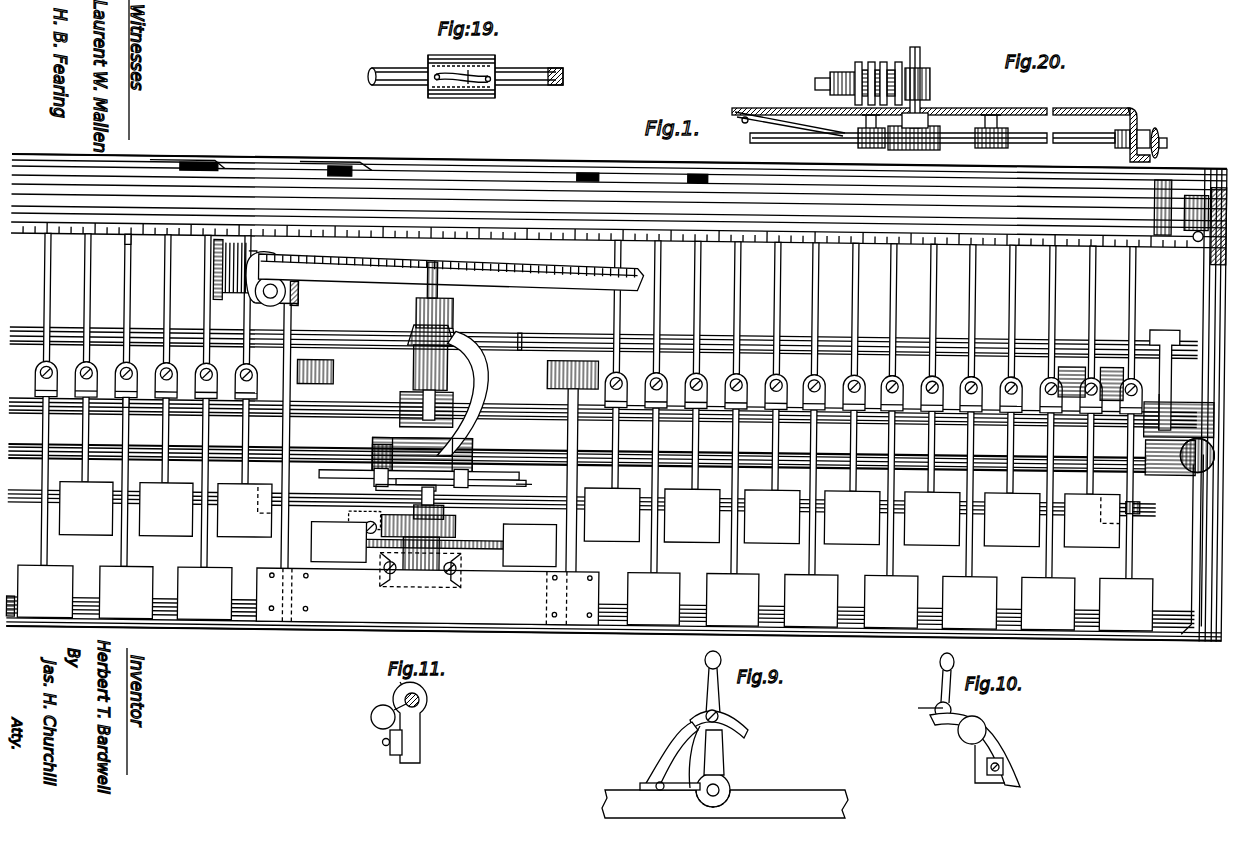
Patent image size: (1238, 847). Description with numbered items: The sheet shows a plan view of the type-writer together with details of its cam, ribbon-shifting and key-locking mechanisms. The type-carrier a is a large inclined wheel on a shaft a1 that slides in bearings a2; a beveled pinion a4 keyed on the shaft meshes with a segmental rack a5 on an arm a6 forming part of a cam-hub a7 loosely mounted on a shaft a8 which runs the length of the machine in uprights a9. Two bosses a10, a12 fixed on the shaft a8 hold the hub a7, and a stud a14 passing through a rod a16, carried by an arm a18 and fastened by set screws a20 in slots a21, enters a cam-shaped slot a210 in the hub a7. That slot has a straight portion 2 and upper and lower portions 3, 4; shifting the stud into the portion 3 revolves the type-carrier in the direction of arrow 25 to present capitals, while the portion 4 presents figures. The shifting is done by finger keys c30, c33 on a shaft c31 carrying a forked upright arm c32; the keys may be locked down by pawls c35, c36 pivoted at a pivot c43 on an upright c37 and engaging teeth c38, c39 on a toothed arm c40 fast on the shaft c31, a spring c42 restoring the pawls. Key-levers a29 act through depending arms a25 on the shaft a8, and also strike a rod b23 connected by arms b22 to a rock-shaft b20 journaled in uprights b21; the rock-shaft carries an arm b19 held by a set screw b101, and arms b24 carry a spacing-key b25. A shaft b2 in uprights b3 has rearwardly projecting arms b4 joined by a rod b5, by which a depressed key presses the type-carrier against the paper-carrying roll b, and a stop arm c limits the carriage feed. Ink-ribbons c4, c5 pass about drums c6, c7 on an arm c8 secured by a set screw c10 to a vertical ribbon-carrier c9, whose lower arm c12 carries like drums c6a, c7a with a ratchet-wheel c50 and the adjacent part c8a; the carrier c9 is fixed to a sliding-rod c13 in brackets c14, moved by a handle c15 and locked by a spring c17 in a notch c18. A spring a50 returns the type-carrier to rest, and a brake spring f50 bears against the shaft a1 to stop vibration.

In FIG. 1, the paper-carrying roll b is at (442, 175).
In FIG. 1, the stop arm c is at (217, 237).
In FIG. 1, the ink-ribbon drum c7 is at (225, 244).
In FIG. 1, the copying ribbon c5 is at (233, 246).
In FIG. 1, the record ribbon c4 is at (242, 246).
In FIG. 1, the ink-ribbon drum c6 is at (254, 247).
In FIG. 20, the ink-ribbon drum c6 is at (1068, 110).
In FIG. 1, the housing c8 is at (276, 257).
In FIG. 1, the ribbon-carrier c9 is at (274, 292).
In FIG. 20, the ribbon-carrier c9 is at (922, 105).
In FIG. 1, the set screw c10 is at (303, 292).
In FIG. 1, the type-carrier a is at (555, 275).
In FIG. 1, the arrow 25 is at (364, 284).
In FIG. 1, the cam-hub a7 is at (430, 288).
In FIG. 19, the cam-hub a7 is at (432, 57).
In FIG. 1, the bearings a2 is at (449, 313).
In FIG. 1, the beveled pinion a4 is at (420, 333).
In FIG. 1, the segmental rack a5 is at (460, 334).
In FIG. 1, the arm a6 is at (488, 360).
In FIG. 1, the type-carrier shaft a1 is at (407, 397).
In FIG. 11, the type-carrier shaft a1 is at (422, 699).
In FIG. 1, the boss or hub a10 is at (473, 436).
In FIG. 1, the boss or hub a12 is at (381, 438).
In FIG. 1, the shaft a8 is at (508, 442).
In FIG. 19, the shaft a8 is at (368, 73).
In FIG. 1, the rod b5 is at (522, 334).
In FIG. 1, the rock-shaft b20 is at (336, 364).
In FIG. 1, the shaft b2 is at (514, 406).
In FIG. 1, the arms b24 is at (573, 431).
In FIG. 1, the arm b19 is at (149, 300).
In FIG. 1, the set screw b101 is at (150, 356).
In FIG. 1, the slots a21 is at (325, 472).
In FIG. 1, the set screws a20 is at (474, 469).
In FIG. 1, the rod a16 is at (528, 478).
In FIG. 1, the stud a14 is at (382, 479).
In FIG. 1, the arm a18 is at (474, 493).
In FIG. 1, the upright arm c32 is at (449, 493).
In FIG. 1, the pawl c36 is at (459, 524).
In FIG. 9, the pawl c36 is at (740, 730).
In FIG. 1, the upright c37 is at (354, 516).
In FIG. 9, the upright c37 is at (668, 755).
In FIG. 10, the upright c37 is at (1012, 760).
In FIG. 1, the pawl c35 is at (384, 539).
In FIG. 9, the pawl c35 is at (703, 720).
In FIG. 1, the capital finger key c30 is at (345, 551).
In FIG. 1, the figure finger key c33 is at (527, 555).
In FIG. 1, the spacing-key b25 is at (466, 609).
In FIG. 1, the key-levers a29 is at (781, 431).
In FIG. 1, the uprights b21 is at (1075, 353).
In FIG. 1, the arms b22 is at (1111, 427).
In FIG. 1, the rearwardly projecting arms b4 is at (1175, 378).
In FIG. 1, the uprights b3 is at (1177, 405).
In FIG. 1, the depending arms a25 is at (1167, 456).
In FIG. 1, the uprights a9 is at (1200, 453).
In FIG. 1, the rod b23 is at (1145, 503).
In FIG. 1, the spring a50 is at (1181, 228).
In FIG. 19, the cam-shaped slot a210 is at (478, 70).
In FIG. 19, the straight portion 2 is at (468, 82).
In FIG. 19, the upper portion 3 is at (433, 98).
In FIG. 19, the lower portion 4 is at (494, 98).
In FIG. 20, the notch c18 is at (822, 138).
In FIG. 20, the brackets c14 is at (862, 148).
In FIG. 20, the sliding-rod c13 is at (940, 145).
In FIG. 20, the second arm or shaft c12 is at (826, 80).
In FIG. 20, the ratchet-wheel c50 is at (845, 72).
In FIG. 20, the lower ink-ribbon drum c6a is at (862, 70).
In FIG. 20, the lower ink-ribbon drum c7a is at (883, 70).
In FIG. 20, the flange c8a is at (912, 66).
In FIG. 20, the locking spring c17 is at (784, 108).
In FIG. 20, the handle c15 is at (1158, 134).
In FIG. 11, the brake spring f50 is at (371, 715).
In FIG. 9, the shaft c31 is at (722, 795).
In FIG. 9, the toothed arm c40 is at (728, 777).
In FIG. 9, the tooth c38 is at (728, 742).
In FIG. 9, the tooth c39 is at (700, 734).
In FIG. 10, the pivot c43 is at (944, 713).
In FIG. 10, the spring c42 is at (1000, 742).